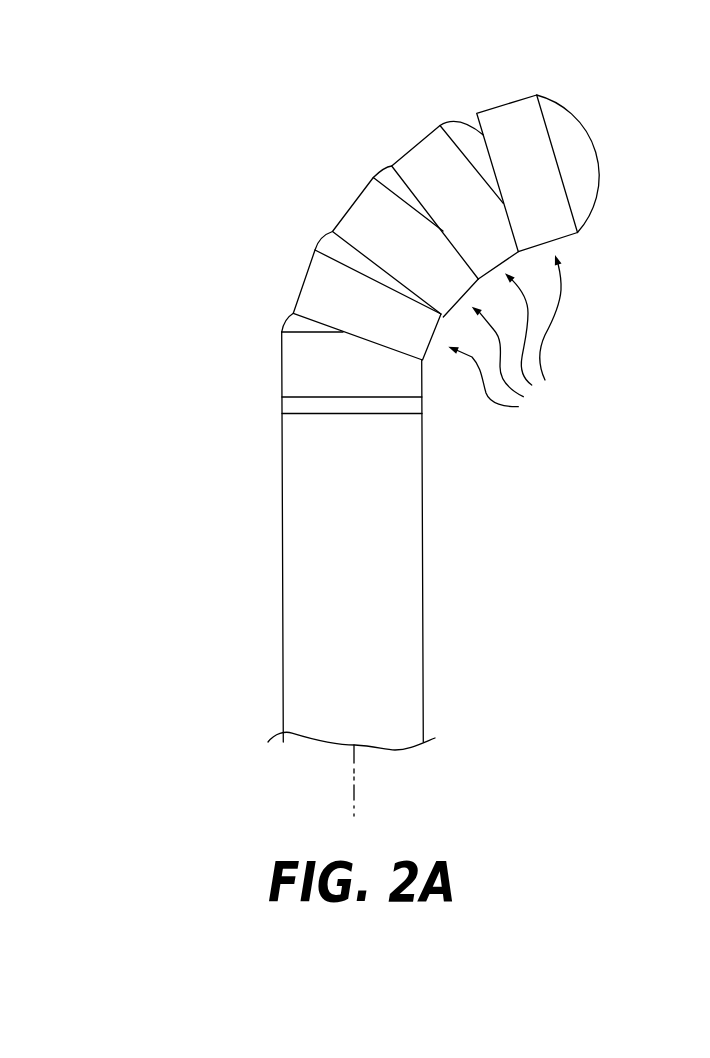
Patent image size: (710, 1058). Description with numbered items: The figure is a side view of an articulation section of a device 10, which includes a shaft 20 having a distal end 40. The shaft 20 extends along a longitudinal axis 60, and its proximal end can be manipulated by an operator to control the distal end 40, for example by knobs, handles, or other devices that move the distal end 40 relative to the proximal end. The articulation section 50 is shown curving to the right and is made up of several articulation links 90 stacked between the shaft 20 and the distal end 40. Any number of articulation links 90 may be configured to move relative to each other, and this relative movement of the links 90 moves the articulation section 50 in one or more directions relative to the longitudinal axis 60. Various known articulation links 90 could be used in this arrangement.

The device 10 is at (259, 231).
The shaft 20 is at (455, 584).
The distal end 40 is at (625, 143).
The articulation section 50 is at (294, 108).
The longitudinal axis 60 is at (370, 778).
The articulation links 90 is at (504, 337).